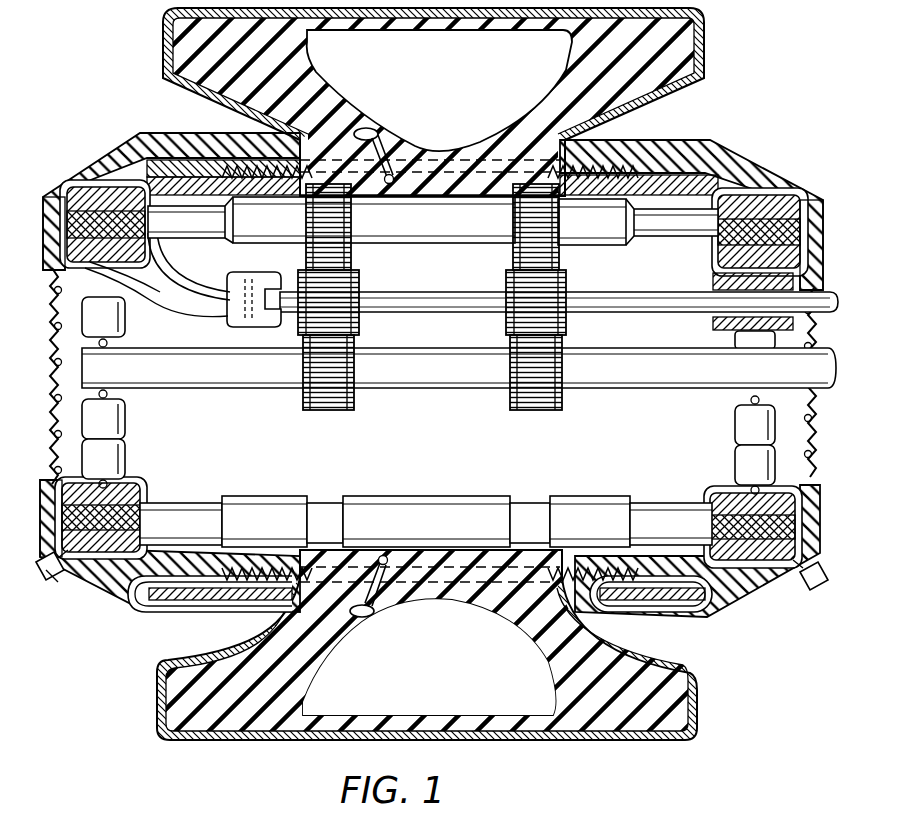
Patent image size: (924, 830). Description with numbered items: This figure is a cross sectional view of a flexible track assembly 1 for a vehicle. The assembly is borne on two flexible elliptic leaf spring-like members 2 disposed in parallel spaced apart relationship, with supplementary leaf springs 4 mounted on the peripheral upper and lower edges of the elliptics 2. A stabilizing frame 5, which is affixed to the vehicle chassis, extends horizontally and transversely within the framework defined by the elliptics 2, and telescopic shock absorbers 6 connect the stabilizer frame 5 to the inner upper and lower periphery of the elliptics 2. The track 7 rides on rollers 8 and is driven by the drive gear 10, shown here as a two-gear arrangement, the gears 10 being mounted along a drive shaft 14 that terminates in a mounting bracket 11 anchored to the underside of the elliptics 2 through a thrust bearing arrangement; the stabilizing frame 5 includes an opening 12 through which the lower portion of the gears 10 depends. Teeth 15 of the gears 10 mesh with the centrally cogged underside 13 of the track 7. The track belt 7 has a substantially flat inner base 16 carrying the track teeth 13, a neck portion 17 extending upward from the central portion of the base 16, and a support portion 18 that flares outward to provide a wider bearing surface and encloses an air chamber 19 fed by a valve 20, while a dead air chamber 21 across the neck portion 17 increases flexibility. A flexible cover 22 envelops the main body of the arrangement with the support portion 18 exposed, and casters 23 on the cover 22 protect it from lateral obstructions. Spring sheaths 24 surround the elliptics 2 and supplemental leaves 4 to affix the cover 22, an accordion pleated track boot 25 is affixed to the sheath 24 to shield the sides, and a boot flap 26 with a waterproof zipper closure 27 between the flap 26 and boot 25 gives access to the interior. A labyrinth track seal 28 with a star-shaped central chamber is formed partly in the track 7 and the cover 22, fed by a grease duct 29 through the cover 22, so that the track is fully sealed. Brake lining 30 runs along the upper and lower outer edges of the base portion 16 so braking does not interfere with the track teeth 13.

The flexible track assembly 1 is at (832, 195).
The elliptic leaf spring-like members 2 is at (90, 188).
The supplementary leaf springs 4 is at (128, 262).
The stabilizing frame 5 is at (420, 388).
The telescopic shock absorbers 6 is at (125, 325).
The track 7 is at (478, 178).
The rollers 8 is at (672, 242).
The drive gear 10 is at (432, 260).
The mounting bracket 11 is at (210, 303).
The opening 12 is at (350, 394).
The cogged underside 13 is at (342, 184).
The drive shaft 14 is at (605, 308).
The teeth 15 is at (340, 346).
The inner base 16 is at (290, 200).
The neck portion 17 is at (325, 183).
The support portion 18 is at (173, 22).
The air chamber 19 is at (452, 67).
The valve 20 is at (386, 132).
The dead air chamber 21 is at (447, 160).
The flexible cover 22 is at (112, 158).
The casters 23 is at (44, 590).
The spring sheath 24 is at (72, 183).
The track boot 25 is at (56, 300).
The boot flap 26 is at (55, 247).
The waterproof zipper closure 27 is at (53, 478).
The track seal 28 is at (270, 162).
The grease duct 29 is at (186, 608).
The brake lining 30 is at (133, 157).